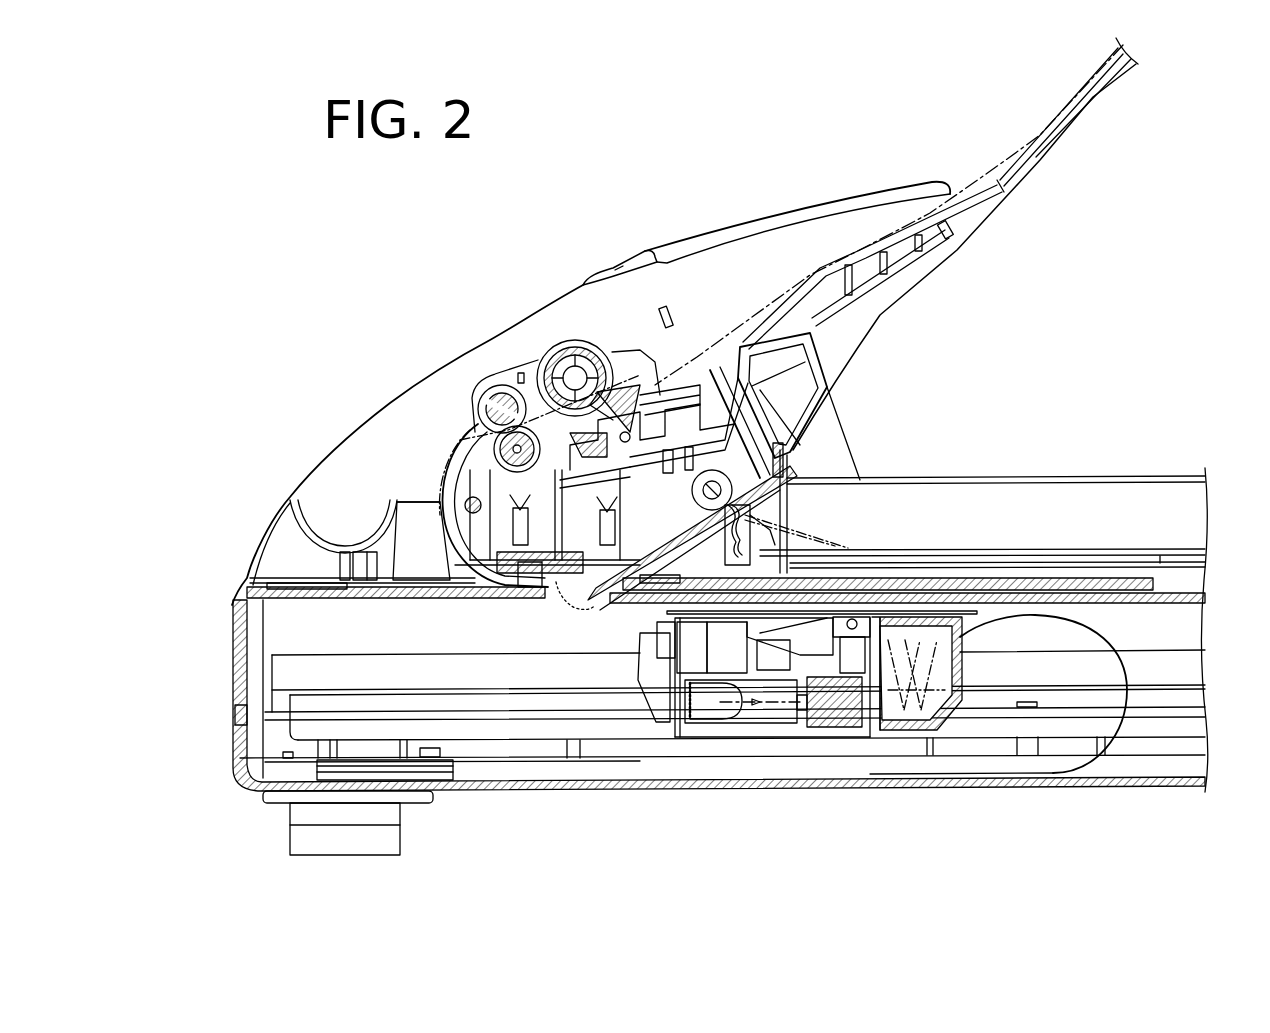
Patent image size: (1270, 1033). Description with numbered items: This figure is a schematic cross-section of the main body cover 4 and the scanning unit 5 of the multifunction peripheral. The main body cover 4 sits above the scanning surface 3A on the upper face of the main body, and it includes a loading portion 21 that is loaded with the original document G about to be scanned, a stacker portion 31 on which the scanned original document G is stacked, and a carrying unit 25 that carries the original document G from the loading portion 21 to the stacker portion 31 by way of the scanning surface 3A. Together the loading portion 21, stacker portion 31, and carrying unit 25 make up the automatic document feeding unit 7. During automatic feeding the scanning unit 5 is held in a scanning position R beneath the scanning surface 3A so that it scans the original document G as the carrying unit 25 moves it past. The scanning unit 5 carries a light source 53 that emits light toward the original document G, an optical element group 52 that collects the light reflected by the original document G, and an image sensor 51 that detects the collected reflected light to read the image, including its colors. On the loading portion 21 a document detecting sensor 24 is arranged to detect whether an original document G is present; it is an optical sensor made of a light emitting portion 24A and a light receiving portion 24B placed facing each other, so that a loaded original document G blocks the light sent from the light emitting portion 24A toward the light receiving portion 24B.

The main body cover 4 is at (427, 372).
The automatic document feeding unit 7 is at (597, 240).
The loading portion 21 is at (929, 180).
The document detecting sensor 24 is at (768, 176).
The light emitting portion 24A is at (674, 332).
The light receiving portion 24B is at (690, 357).
The carrying unit 25 is at (462, 433).
The stacker portion 31 is at (1043, 538).
The scanning surface 3A is at (1205, 598).
The scanning unit 5 is at (807, 673).
The image sensor 51 is at (690, 712).
The optical element group 52 is at (900, 727).
The light source 53 is at (858, 617).
The scanning position R is at (578, 608).
The original document G is at (1068, 98).